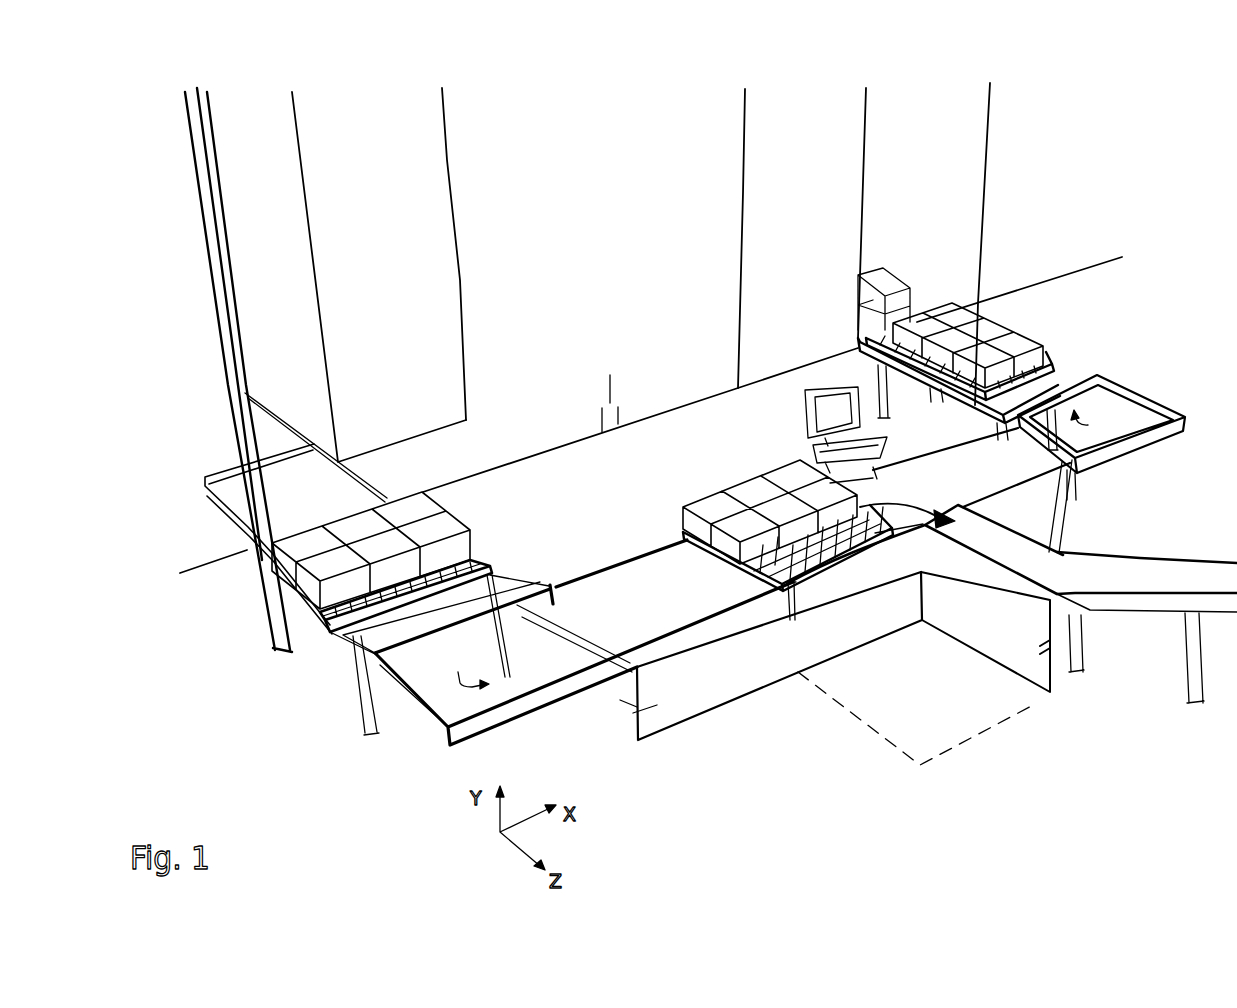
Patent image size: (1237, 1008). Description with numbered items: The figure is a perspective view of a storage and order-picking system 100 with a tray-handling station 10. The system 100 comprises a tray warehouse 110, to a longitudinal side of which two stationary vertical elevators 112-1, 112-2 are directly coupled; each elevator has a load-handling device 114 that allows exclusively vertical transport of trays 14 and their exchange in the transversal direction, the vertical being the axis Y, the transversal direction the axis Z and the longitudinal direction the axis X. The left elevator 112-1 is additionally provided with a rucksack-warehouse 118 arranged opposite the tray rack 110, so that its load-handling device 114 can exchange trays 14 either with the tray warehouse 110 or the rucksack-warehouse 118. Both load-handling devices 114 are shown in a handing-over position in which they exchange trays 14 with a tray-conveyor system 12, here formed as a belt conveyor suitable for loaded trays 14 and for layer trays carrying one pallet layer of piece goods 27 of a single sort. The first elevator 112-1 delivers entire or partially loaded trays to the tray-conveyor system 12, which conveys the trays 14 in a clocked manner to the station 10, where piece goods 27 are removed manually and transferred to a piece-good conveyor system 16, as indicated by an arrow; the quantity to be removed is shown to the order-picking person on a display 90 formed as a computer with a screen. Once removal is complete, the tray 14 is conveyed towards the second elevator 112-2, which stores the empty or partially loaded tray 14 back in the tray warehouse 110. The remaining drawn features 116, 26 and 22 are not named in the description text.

The storage and order-picking system 100 is at (1069, 115).
The tray warehouse 110 is at (598, 233).
The rucksack-warehouse 118 is at (462, 336).
The first vertical elevator 112-1 is at (222, 539).
The second vertical elevator 112-2 is at (968, 202).
The load-handling device 114 is at (214, 503).
The vertical movement direction 116 is at (281, 430).
The piece goods 27 is at (425, 493).
The tray 14 is at (480, 557).
The tray-conveyor system 12 is at (446, 692).
The tray-handling station 10 is at (797, 725).
The transfer conveyor section 26 is at (932, 563).
The piece-good conveyor system 16 is at (1148, 550).
The floor area (dashed) 22 is at (998, 728).
The display 90 is at (805, 412).